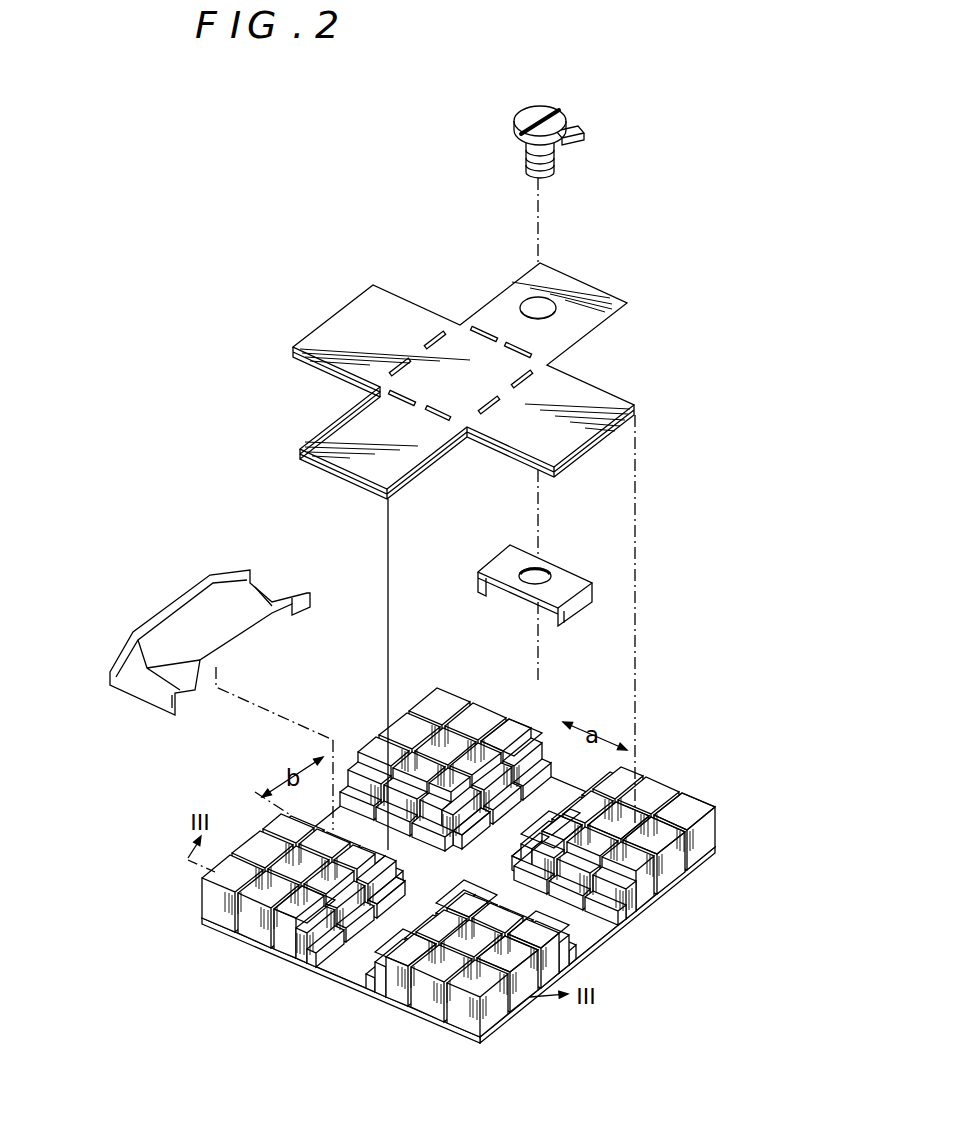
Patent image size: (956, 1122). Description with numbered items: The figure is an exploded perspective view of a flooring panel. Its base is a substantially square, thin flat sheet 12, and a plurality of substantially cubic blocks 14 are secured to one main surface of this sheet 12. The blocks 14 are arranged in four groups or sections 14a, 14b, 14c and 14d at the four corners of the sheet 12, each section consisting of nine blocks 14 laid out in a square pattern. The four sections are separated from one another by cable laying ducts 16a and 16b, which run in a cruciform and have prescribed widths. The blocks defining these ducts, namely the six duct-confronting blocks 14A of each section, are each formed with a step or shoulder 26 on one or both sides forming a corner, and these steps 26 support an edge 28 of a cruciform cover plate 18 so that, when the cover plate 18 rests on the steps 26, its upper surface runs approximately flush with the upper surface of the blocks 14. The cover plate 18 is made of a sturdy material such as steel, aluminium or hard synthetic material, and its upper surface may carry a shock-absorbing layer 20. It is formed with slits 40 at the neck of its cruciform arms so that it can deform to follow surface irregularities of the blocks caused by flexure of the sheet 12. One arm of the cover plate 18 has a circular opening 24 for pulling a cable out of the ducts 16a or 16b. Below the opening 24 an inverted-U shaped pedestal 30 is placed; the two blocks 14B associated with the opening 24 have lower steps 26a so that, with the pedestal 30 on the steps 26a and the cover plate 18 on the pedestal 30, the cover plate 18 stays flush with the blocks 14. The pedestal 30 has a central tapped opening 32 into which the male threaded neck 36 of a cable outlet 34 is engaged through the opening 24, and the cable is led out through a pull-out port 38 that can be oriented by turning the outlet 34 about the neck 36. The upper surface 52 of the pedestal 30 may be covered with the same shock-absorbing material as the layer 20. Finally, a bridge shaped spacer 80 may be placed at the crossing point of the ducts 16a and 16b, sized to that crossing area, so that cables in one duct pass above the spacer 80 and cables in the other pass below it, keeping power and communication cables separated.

The flat sheet 12 is at (320, 970).
The block 14 is at (627, 770).
The block group 14a is at (437, 1003).
The block group 14b is at (710, 796).
The block group 14c is at (395, 728).
The block group 14d is at (258, 834).
The duct-defining block 14A is at (462, 905).
The block associated with the opening 14B is at (512, 730).
The cable laying duct 16a is at (358, 945).
The cable laying duct 16b is at (623, 923).
The cover plate 18 is at (441, 364).
The shock-absorbing layer 20 is at (378, 302).
The circular opening 24 is at (552, 313).
The step 26 is at (362, 767).
The lowered step 26a is at (517, 782).
The edge of cover plate 28 is at (330, 423).
The pedestal 30 is at (507, 570).
The tapped opening 32 is at (540, 570).
The cable outlet 34 is at (539, 118).
The threaded neck 36 is at (525, 158).
The cable pull-out port 38 is at (582, 130).
The slit 40 is at (482, 327).
The upper surface of pedestal 52 is at (502, 563).
The bridge shaped spacer 80 is at (207, 608).